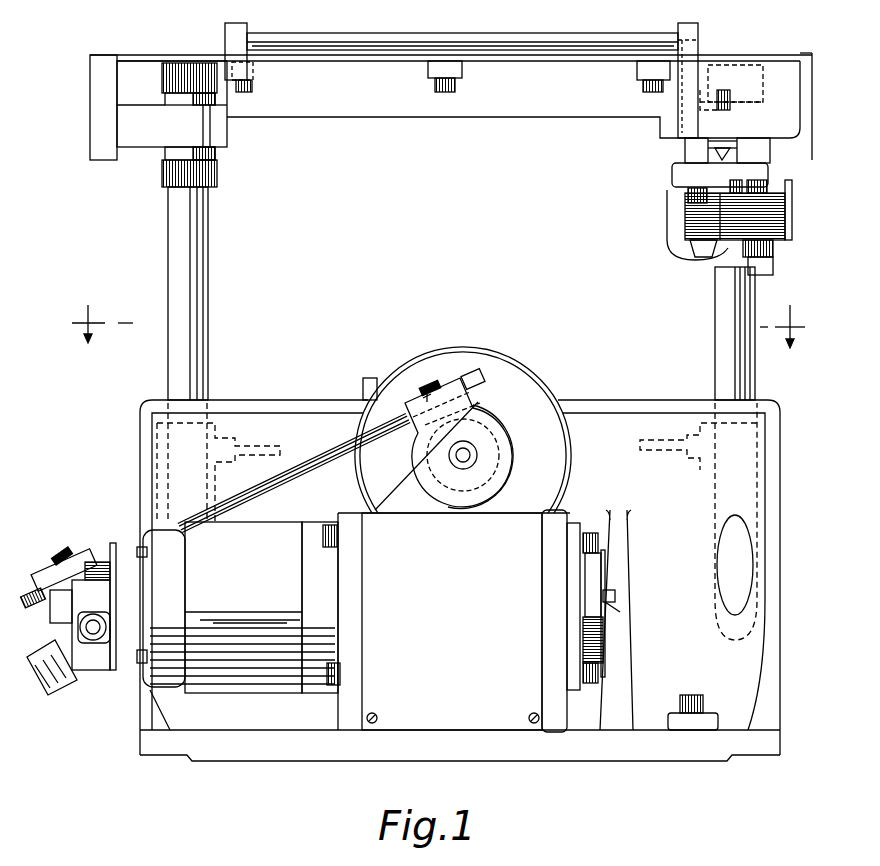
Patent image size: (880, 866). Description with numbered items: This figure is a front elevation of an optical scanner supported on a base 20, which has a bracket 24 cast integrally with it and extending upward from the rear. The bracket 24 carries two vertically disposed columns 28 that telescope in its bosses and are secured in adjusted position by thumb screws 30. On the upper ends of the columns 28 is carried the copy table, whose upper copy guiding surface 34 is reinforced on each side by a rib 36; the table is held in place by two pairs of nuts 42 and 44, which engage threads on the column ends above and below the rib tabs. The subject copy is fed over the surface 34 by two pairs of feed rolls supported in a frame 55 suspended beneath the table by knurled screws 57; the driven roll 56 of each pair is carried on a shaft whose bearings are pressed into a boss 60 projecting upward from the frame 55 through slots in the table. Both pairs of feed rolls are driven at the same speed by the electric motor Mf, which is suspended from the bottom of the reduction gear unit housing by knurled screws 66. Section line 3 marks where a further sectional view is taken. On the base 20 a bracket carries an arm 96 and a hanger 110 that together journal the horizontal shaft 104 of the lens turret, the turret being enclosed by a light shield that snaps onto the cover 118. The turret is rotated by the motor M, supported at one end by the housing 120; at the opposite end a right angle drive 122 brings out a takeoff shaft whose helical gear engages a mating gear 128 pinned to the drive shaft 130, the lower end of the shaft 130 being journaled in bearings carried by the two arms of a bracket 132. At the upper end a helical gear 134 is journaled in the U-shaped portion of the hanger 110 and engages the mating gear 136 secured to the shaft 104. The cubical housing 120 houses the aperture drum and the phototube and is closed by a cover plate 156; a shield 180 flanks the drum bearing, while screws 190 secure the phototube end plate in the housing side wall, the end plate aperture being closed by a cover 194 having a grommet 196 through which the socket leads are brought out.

The base 20 is at (397, 745).
The bracket 24 is at (147, 437).
The columns 28 is at (198, 243).
The thumb screws 30 is at (249, 450).
The upper copy guiding surface 34 is at (138, 53).
The rib 36 is at (102, 152).
The nuts 42 is at (160, 68).
The nuts 44 is at (207, 173).
The frame 55 is at (442, 123).
The driven roll 56 is at (497, 29).
The knurled screws 57 is at (240, 88).
The boss 60 is at (237, 32).
The knurled screws 66 is at (767, 187).
The electric motor Mf is at (667, 225).
The section line 3 is at (424, 313).
The arm 96 is at (398, 498).
The horizontal shaft 104 is at (470, 456).
The hanger 110 is at (470, 428).
The cover 118 is at (507, 383).
The housing 120 is at (355, 700).
The right angle drive 122 is at (96, 670).
The mating gear 128 is at (62, 548).
The drive shaft 130 is at (302, 462).
The bracket 132 is at (80, 558).
The helical gear 134 is at (422, 382).
The mating gear 136 is at (485, 493).
The cover plate 156 is at (492, 718).
The shield 180 is at (600, 640).
The screws 190 is at (598, 545).
The cover 194 is at (604, 582).
The grommet 196 is at (612, 600).